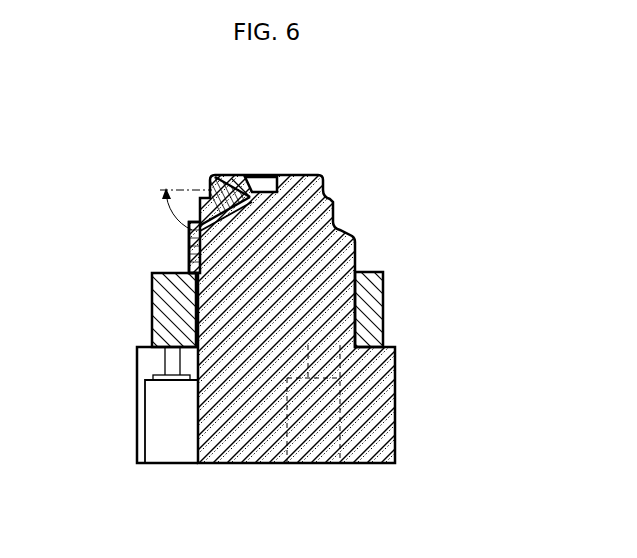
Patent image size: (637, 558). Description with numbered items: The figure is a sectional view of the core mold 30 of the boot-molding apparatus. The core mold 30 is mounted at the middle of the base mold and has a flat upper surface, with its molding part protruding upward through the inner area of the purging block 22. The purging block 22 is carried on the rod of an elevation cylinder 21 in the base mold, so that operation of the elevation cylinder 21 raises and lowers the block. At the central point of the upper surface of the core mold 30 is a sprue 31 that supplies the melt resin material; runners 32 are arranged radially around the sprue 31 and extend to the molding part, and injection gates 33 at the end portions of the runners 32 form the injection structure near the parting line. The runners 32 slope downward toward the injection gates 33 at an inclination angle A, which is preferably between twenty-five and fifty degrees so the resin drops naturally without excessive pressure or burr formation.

The core mold 30 is at (326, 120).
The sprue 31 is at (270, 174).
The runners 32 is at (208, 172).
The injection gates 33 is at (187, 254).
The purging block 22 is at (152, 305).
The elevation cylinder 21 is at (190, 425).
The inclination angle A is at (180, 213).